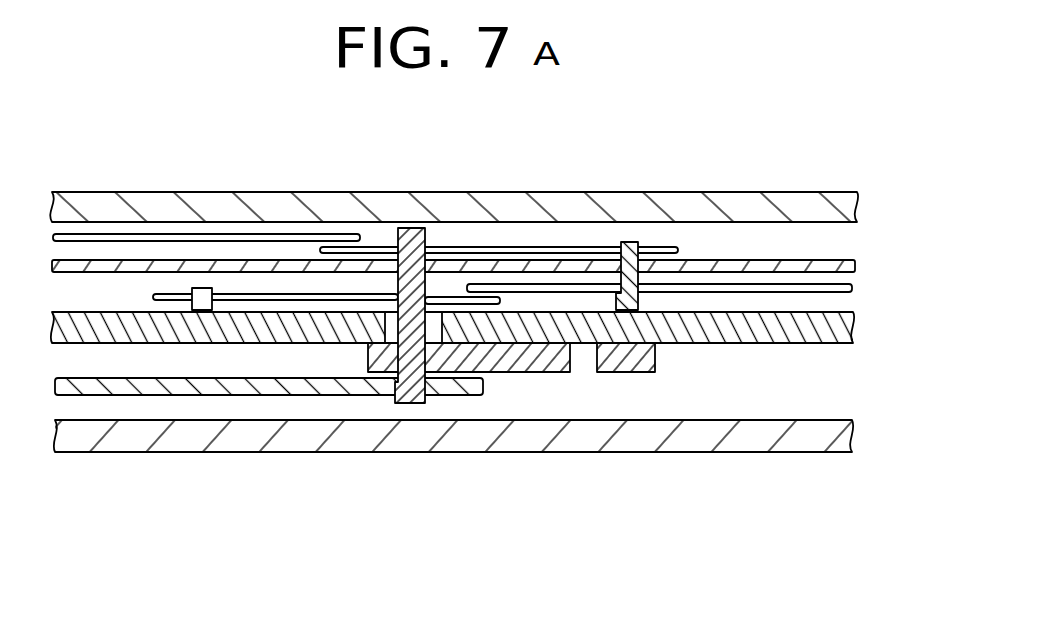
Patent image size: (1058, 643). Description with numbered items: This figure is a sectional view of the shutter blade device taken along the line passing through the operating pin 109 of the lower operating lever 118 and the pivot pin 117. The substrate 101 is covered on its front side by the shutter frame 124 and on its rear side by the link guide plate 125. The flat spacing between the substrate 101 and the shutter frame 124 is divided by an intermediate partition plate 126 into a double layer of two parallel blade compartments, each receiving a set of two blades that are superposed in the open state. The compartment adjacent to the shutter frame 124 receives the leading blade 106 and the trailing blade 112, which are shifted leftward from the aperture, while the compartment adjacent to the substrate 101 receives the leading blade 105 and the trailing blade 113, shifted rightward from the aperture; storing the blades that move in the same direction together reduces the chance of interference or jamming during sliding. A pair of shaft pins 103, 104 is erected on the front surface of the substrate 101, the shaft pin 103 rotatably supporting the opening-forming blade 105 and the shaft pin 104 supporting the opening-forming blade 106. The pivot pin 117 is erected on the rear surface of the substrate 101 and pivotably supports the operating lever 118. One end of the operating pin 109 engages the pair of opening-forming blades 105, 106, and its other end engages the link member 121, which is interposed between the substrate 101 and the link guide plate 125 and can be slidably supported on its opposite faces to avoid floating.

The substrate 101 is at (832, 331).
The shaft pin 103 is at (202, 288).
The shaft pin 104 is at (640, 301).
The leading blade 105 is at (248, 296).
The leading blade 106 is at (678, 250).
The operating pin 109 is at (408, 397).
The trailing blade 112 is at (103, 234).
The trailing blade 113 is at (853, 287).
The pivot pin 117 is at (583, 362).
The operating lever 118 is at (653, 360).
The link member 121 is at (298, 387).
The shutter frame 124 is at (507, 192).
The link guide plate 125 is at (203, 437).
The intermediate partition plate 126 is at (747, 262).